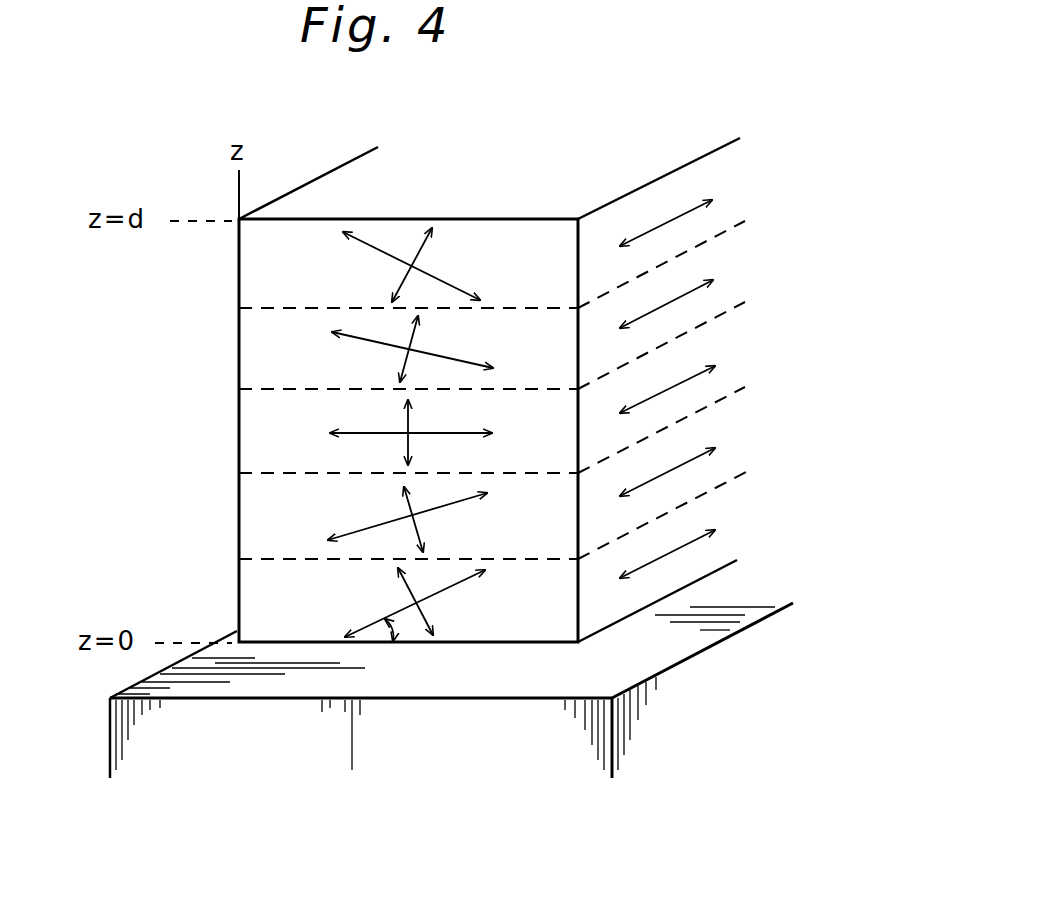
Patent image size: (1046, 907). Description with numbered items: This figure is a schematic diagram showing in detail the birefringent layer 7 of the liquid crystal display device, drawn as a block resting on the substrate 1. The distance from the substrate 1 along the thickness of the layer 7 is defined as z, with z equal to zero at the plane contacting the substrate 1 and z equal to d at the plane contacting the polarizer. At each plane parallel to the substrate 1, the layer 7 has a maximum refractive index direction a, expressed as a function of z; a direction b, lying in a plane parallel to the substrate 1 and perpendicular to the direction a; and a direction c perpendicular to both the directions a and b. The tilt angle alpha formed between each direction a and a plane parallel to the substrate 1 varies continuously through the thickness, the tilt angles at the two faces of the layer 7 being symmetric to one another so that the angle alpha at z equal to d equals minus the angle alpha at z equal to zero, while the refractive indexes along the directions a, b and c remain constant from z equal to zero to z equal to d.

The birefringent layer 7 is at (239, 405).
The substrate 1 is at (687, 642).
The maximum refractive index direction a is at (435, 434).
The direction b is at (702, 389).
The direction c is at (379, 431).
The tilt angle alpha is at (393, 629).